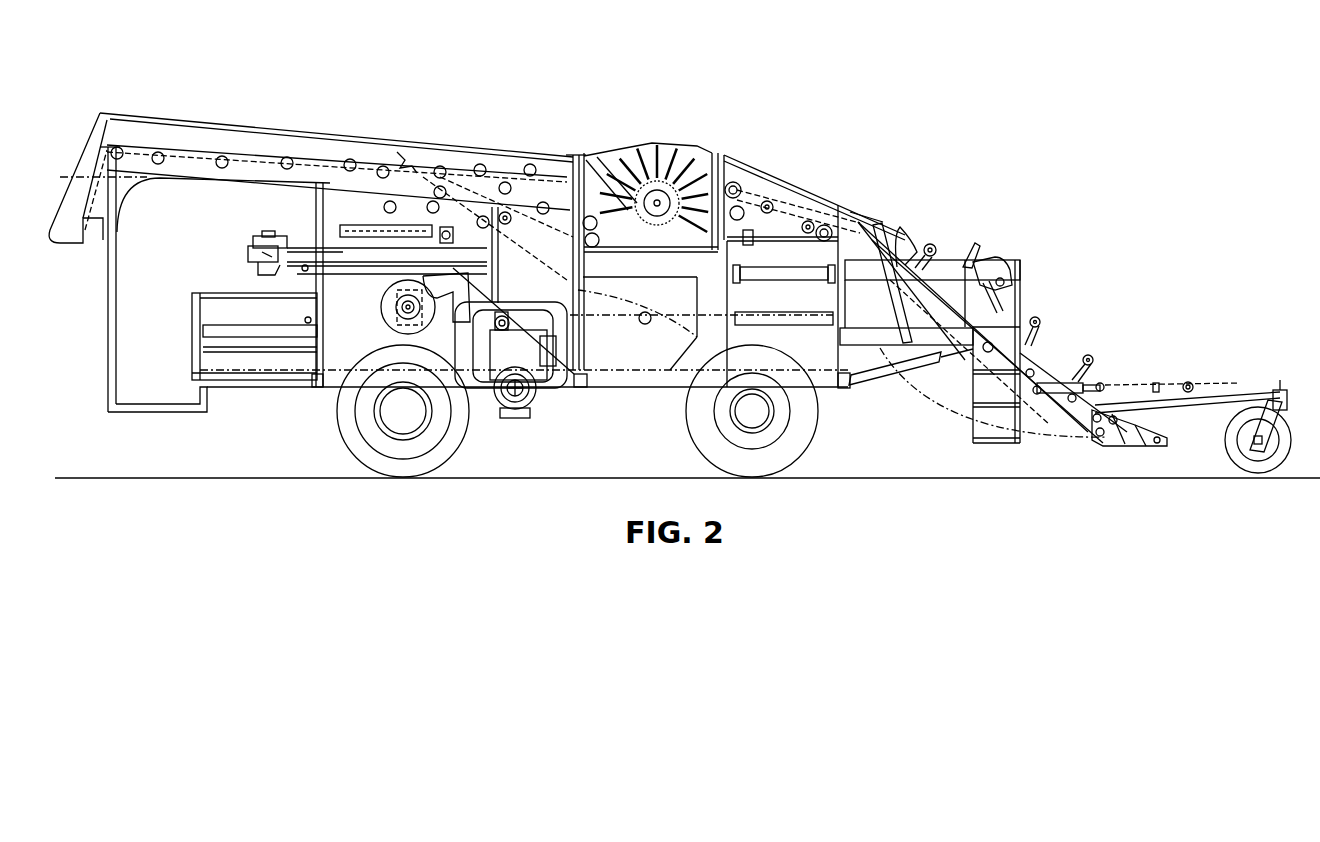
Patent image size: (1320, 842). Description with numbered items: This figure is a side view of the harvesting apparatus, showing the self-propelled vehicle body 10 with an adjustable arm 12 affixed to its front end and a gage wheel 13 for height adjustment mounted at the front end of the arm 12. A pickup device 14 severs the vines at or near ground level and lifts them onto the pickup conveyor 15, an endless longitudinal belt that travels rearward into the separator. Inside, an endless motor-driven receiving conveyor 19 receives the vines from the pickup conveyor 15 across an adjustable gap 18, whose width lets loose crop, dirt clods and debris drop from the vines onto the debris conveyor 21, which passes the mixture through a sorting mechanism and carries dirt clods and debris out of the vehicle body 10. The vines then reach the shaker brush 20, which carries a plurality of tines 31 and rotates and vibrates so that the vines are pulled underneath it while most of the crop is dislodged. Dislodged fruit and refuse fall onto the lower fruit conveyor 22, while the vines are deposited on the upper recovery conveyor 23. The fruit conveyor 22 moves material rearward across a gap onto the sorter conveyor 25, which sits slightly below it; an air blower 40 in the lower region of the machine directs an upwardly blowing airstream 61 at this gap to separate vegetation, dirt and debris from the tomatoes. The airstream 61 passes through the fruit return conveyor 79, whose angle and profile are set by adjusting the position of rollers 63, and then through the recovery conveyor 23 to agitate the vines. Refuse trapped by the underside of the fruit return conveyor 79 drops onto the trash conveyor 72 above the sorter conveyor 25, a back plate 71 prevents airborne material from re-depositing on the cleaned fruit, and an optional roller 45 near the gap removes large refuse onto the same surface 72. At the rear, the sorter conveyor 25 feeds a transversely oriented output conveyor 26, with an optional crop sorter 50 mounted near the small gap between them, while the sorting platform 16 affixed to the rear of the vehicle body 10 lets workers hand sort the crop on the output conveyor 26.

The vehicle body 10 is at (474, 201).
The adjustable arm 12 is at (1203, 376).
The gage wheel 13 is at (1204, 458).
The pickup device 14 is at (1088, 463).
The pickup conveyor 15 is at (1004, 332).
The sorting platform 16 is at (128, 262).
The adjustable gap 18 is at (818, 214).
The receiving conveyor 19 is at (800, 204).
The shaker brush 20 is at (662, 159).
The debris conveyor 21 is at (815, 196).
The fruit conveyor 22 is at (541, 365).
The recovery conveyor 23 is at (612, 233).
The sorter conveyor 25 is at (365, 238).
The output conveyor 26 is at (229, 326).
The tines 31 is at (680, 237).
The air blower 40 is at (334, 371).
The roller 45 is at (277, 402).
The crop sorter 50 is at (232, 249).
The airstream 61 is at (430, 127).
The rollers 63 is at (330, 392).
The back plate 71 is at (268, 285).
The trash conveyor 72 is at (396, 222).
The fruit return conveyor 79 is at (527, 255).